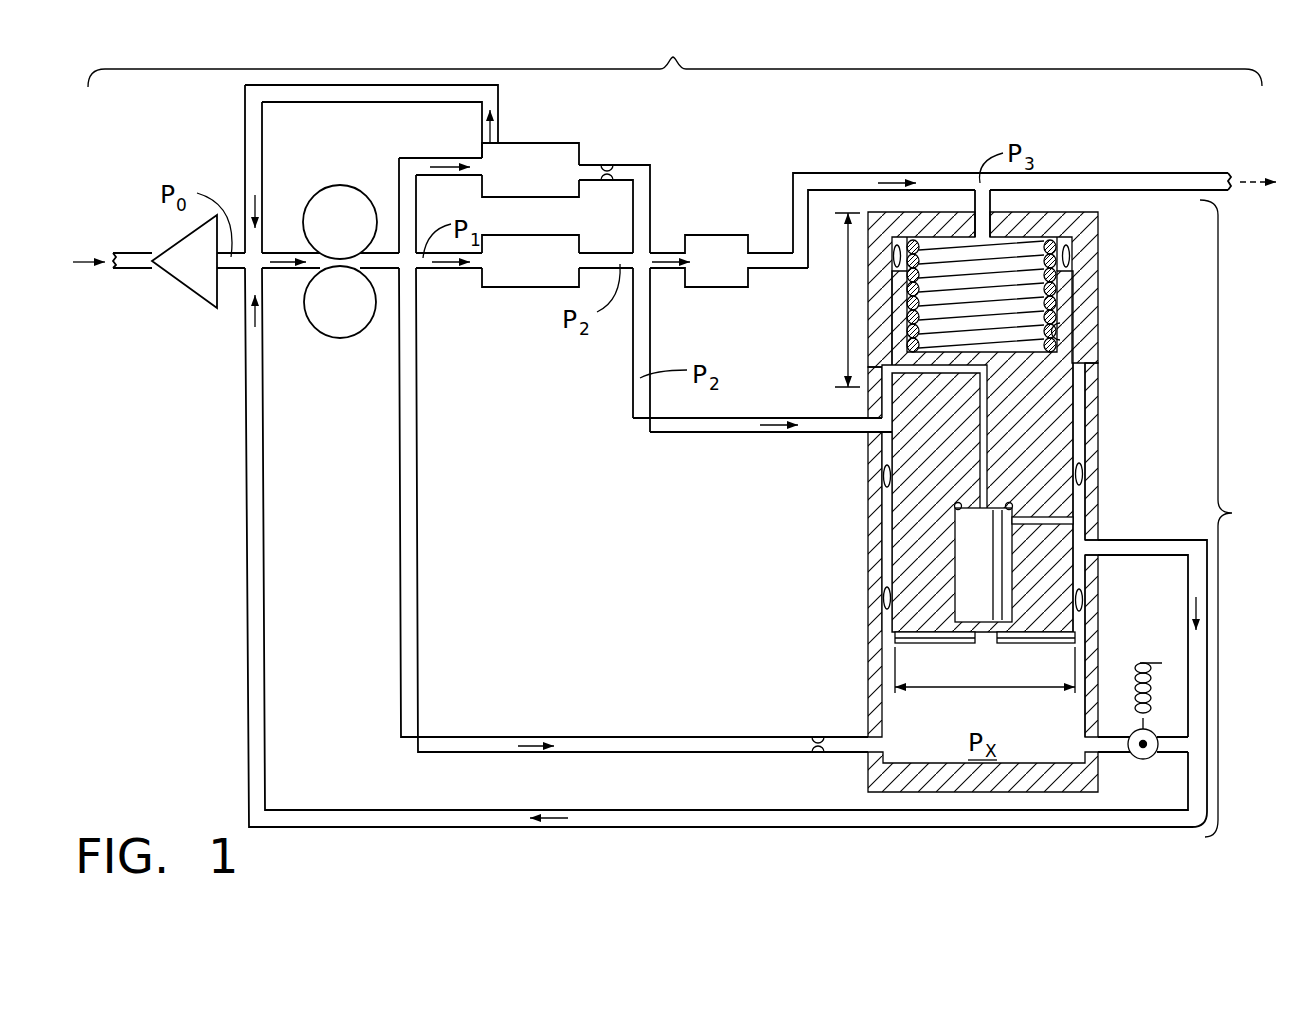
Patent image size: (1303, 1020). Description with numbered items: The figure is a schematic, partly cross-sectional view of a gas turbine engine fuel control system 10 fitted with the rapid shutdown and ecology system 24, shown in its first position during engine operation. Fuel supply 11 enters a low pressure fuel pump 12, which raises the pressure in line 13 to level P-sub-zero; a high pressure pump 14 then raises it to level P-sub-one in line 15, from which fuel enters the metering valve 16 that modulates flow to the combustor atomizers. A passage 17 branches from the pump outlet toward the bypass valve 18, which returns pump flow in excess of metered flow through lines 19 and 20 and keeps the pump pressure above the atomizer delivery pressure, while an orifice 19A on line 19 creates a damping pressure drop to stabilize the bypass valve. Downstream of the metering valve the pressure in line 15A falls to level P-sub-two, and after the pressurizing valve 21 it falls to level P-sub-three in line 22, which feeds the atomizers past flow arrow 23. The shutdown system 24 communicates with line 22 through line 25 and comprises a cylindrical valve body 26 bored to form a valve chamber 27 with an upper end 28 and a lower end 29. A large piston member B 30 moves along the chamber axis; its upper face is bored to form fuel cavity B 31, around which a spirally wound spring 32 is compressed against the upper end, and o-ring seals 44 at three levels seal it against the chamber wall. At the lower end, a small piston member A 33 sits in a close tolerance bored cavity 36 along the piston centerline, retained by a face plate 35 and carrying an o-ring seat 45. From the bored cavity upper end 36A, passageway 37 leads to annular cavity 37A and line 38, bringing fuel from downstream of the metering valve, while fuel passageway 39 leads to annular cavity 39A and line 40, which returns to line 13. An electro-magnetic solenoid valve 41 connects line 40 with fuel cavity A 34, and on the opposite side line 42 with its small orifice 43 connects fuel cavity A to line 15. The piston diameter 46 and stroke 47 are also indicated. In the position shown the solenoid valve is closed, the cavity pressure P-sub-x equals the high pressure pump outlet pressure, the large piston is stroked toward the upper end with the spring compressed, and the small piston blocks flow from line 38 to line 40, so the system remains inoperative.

The gas turbine engine fuel control system 10 is at (673, 57).
The fuel supply 11 is at (82, 268).
The low pressure fuel pump 12 is at (193, 274).
The line 13 is at (281, 278).
The high pressure pump 14 is at (338, 318).
The line 15 is at (452, 270).
The line 15A is at (613, 217).
The metering valve 16 is at (532, 287).
The bypass passage 17 is at (397, 182).
The bypass valve 18 is at (528, 158).
The line 19 is at (650, 203).
The orifice 19A is at (606, 170).
The line 20 is at (377, 103).
The pressurizing valve 21 is at (710, 235).
The line 22 is at (840, 173).
The flow arrow 23 is at (1250, 175).
The rapid shutdown and ecology system 24 is at (1232, 513).
The line 25 is at (992, 205).
The valve body 26 is at (1100, 362).
The valve chamber 27 is at (1068, 330).
The upper end 28 is at (1058, 290).
The lower end 29 is at (953, 763).
The large piston member B 30 is at (1052, 405).
The fuel cavity B 31 is at (957, 315).
The spirally wound spring 32 is at (1052, 300).
The small piston member A 33 is at (988, 586).
The fuel cavity A 34 is at (1038, 723).
The face plate 35 is at (1012, 640).
The bored cavity 36 is at (997, 540).
The bored cavity upper end 36A is at (993, 508).
The passageway 37 is at (975, 443).
The annular cavity 37A is at (883, 445).
The line 38 is at (823, 417).
The fuel passageway 39 is at (1063, 512).
The annular cavity 39A is at (1088, 570).
The line 40 is at (267, 577).
The electro-magnetic solenoid valve 41 is at (1148, 760).
The line 42 is at (420, 582).
The orifice 43 is at (818, 737).
The o-ring seals 44 is at (1072, 257).
The o-ring seat 45 is at (950, 522).
The diameter 46 is at (980, 690).
The stroke 47 is at (845, 303).